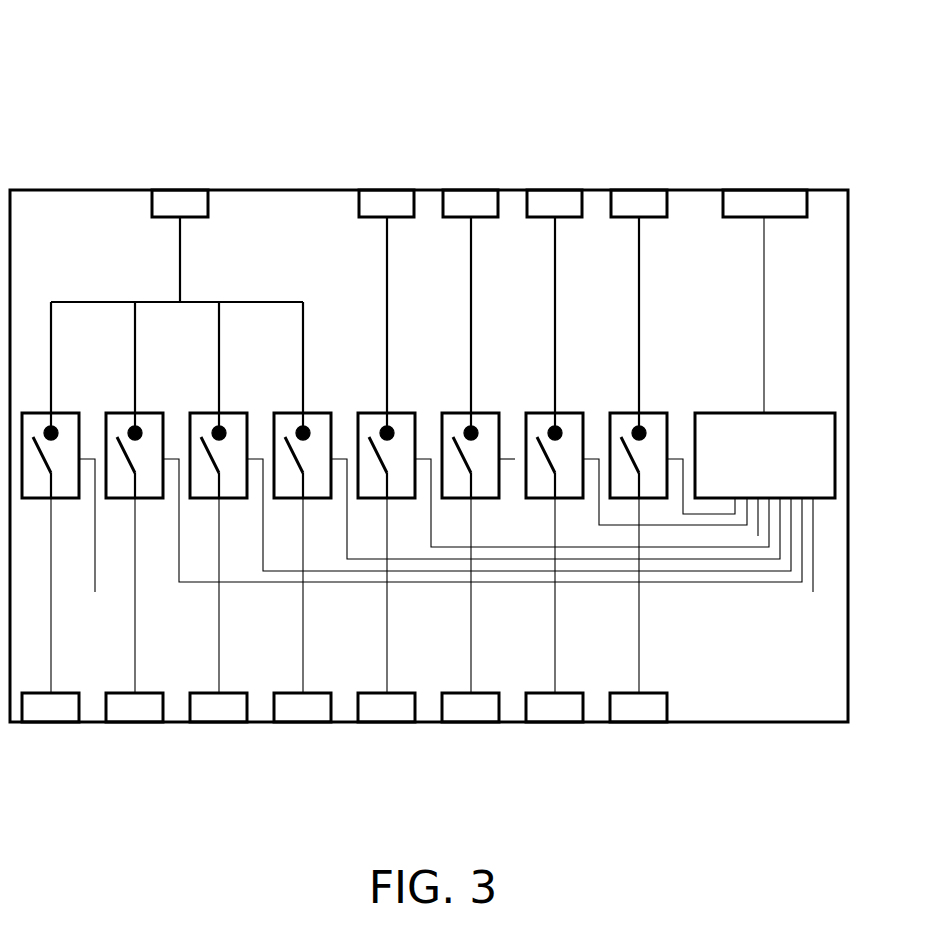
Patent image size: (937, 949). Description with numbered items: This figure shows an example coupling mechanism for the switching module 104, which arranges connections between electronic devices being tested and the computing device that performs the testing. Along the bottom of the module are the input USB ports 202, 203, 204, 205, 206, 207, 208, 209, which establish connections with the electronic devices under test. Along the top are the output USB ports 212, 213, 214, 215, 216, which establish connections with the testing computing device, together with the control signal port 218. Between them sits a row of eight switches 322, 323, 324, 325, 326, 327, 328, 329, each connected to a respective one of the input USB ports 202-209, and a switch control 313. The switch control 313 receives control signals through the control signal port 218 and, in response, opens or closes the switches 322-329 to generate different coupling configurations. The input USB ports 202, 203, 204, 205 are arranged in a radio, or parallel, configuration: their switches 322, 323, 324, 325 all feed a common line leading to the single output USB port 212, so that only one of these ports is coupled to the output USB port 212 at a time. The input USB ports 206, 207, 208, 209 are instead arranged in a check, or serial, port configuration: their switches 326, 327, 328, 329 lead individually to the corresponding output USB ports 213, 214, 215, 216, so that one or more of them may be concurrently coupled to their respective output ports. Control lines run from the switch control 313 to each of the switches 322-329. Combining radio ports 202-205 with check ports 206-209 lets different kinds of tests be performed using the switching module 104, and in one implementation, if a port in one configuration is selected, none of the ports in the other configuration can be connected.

The switching module 104 is at (139, 67).
The output USB port 212 is at (190, 190).
The output USB port 213 is at (397, 190).
The output USB port 214 is at (481, 190).
The output USB port 215 is at (565, 190).
The output USB port 216 is at (649, 190).
The control signal port 218 is at (777, 190).
The switch control 313 is at (776, 413).
The switch 322 is at (61, 413).
The switch 323 is at (145, 413).
The switch 324 is at (229, 413).
The switch 325 is at (313, 413).
The switch 326 is at (397, 413).
The switch 327 is at (481, 413).
The switch 328 is at (565, 413).
The switch 329 is at (649, 413).
The input USB port 202 is at (58, 722).
The input USB port 203 is at (142, 722).
The input USB port 204 is at (226, 722).
The input USB port 205 is at (310, 722).
The input USB port 206 is at (394, 722).
The input USB port 207 is at (478, 722).
The input USB port 208 is at (562, 722).
The input USB port 209 is at (646, 722).